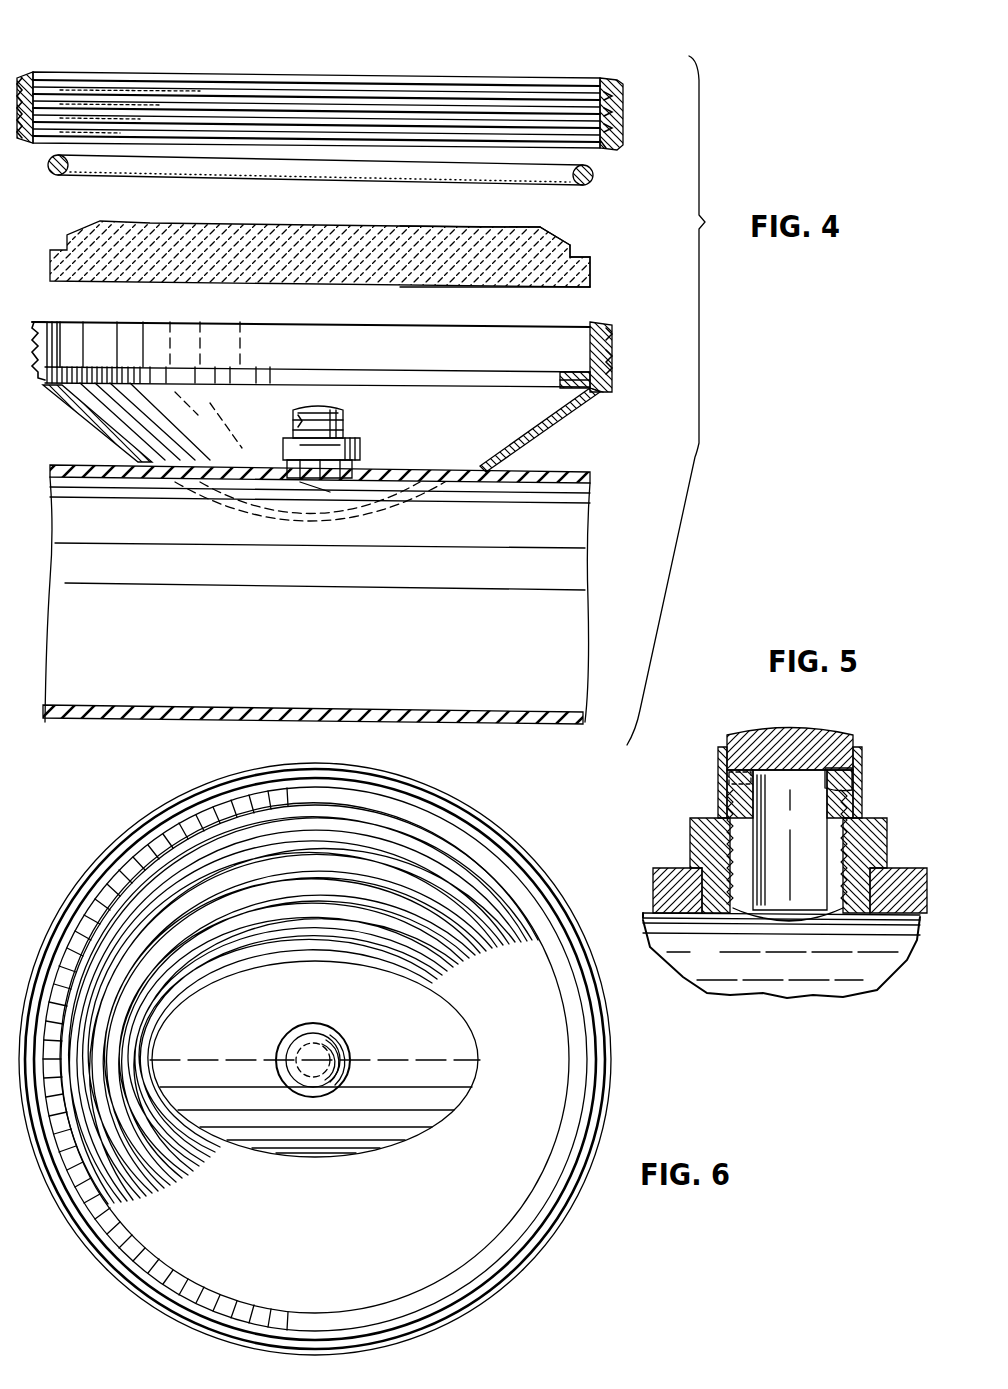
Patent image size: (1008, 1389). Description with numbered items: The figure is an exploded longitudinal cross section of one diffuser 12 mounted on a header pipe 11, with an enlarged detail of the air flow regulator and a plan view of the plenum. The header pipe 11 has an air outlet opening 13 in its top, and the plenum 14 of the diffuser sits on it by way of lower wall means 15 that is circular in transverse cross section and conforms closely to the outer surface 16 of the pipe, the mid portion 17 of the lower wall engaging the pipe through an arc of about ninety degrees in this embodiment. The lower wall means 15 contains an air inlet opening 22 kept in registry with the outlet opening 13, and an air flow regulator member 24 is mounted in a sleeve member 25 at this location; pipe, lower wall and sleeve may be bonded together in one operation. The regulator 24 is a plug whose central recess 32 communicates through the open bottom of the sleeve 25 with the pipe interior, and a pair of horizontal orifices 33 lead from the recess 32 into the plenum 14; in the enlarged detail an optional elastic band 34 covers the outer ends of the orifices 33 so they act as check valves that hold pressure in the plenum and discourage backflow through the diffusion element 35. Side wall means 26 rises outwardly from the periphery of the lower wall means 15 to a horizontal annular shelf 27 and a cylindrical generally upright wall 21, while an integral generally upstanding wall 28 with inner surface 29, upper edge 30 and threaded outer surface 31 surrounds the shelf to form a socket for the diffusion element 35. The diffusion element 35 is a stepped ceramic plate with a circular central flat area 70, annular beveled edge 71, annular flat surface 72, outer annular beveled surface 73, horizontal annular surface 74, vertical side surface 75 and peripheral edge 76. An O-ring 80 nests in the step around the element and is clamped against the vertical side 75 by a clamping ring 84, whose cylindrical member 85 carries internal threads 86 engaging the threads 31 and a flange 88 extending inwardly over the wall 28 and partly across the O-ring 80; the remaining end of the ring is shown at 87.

In FIG. 4, the header pipe 11 is at (305, 591).
In FIG. 4, the diffuser 12 is at (344, 89).
In FIG. 4, the air outlet opening 13 is at (278, 474).
In FIG. 5, the air outlet opening 13 is at (714, 920).
In FIG. 4, the plenum 14 is at (345, 386).
In FIG. 4, the lower wall means 15 is at (305, 453).
In FIG. 6, the lower wall means 15 is at (414, 1058).
In FIG. 4, the outer surface 16 is at (80, 465).
In FIG. 4, the mid portion 17 is at (337, 492).
In FIG. 4, the cylindrical generally upright wall 21 is at (561, 381).
In FIG. 4, the air inlet opening 22 is at (288, 466).
In FIG. 5, the air inlet opening 22 is at (700, 886).
In FIG. 4, the air flow regulator member 24 is at (316, 417).
In FIG. 5, the air flow regulator member 24 is at (787, 760).
In FIG. 6, the air flow regulator member 24 is at (331, 1052).
In FIG. 4, the sleeve member 25 is at (361, 449).
In FIG. 5, the sleeve member 25 is at (700, 829).
In FIG. 6, the sleeve member 25 is at (350, 1073).
In FIG. 4, the side wall means 26 is at (549, 415).
In FIG. 6, the side wall means 26 is at (540, 1100).
In FIG. 4, the horizontal annular shelf 27 is at (581, 378).
In FIG. 6, the horizontal annular shelf 27 is at (580, 1047).
In FIG. 4, the generally upstanding wall 28 is at (603, 391).
In FIG. 6, the generally upstanding wall 28 is at (560, 1008).
In FIG. 4, the inner surface 29 is at (592, 326).
In FIG. 4, the upper edge 30 is at (613, 329).
In FIG. 4, the threaded outer surface 31 is at (613, 361).
In FIG. 5, the recess 32 is at (789, 843).
In FIG. 4, the horizontal orifices 33 is at (295, 425).
In FIG. 5, the horizontal orifices 33 is at (740, 779).
In FIG. 5, the elastic band 34 is at (862, 792).
In FIG. 4, the diffusion element 35 is at (510, 295).
In FIG. 4, the circular central flat area 70 is at (351, 250).
In FIG. 4, the annular beveled edge 71 is at (470, 227).
In FIG. 4, the annular flat surface 72 is at (521, 228).
In FIG. 4, the outer annular beveled surface 73 is at (556, 238).
In FIG. 4, the horizontal annular surface 74 is at (594, 258).
In FIG. 4, the vertical side surface 75 is at (575, 253).
In FIG. 4, the peripheral edge 76 is at (592, 283).
In FIG. 4, the O-ring 80 is at (594, 181).
In FIG. 4, the clamping ring 84 is at (344, 89).
In FIG. 4, the cylindrical member 85 is at (624, 112).
In FIG. 4, the internal threads 86 is at (606, 149).
In FIG. 4, the ring left end wall 87 is at (22, 76).
In FIG. 4, the flange 88 is at (601, 78).